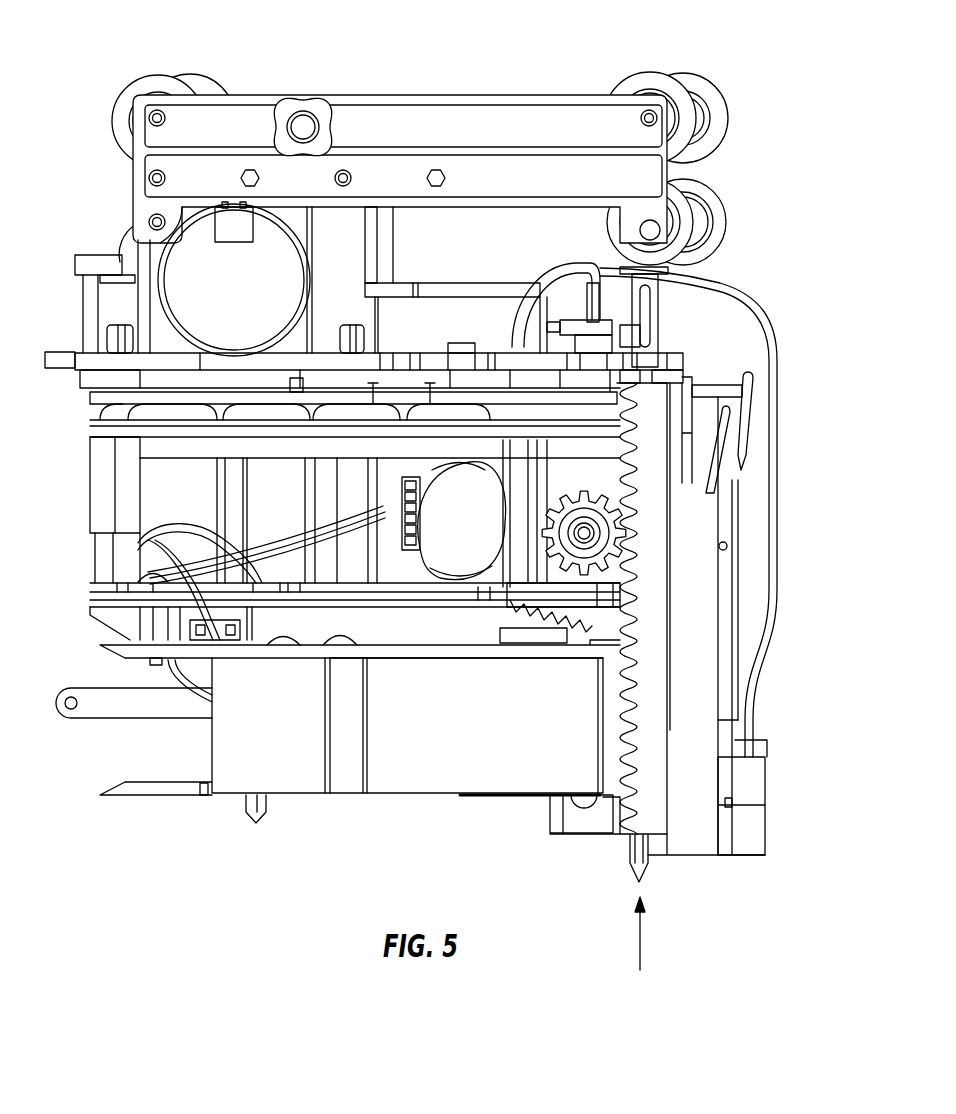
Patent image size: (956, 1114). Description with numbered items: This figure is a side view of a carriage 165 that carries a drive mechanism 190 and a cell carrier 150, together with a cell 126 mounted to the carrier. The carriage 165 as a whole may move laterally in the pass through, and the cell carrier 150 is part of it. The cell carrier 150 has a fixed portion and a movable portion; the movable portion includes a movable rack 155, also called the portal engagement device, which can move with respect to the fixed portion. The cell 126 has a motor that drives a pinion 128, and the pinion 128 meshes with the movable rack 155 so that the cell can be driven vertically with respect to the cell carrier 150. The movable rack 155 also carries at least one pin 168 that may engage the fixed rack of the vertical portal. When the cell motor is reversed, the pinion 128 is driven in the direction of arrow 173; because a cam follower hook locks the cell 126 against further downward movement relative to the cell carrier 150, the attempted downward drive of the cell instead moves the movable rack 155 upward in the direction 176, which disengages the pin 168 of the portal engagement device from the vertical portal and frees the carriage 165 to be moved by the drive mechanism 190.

The drive mechanism 190 is at (550, 48).
The carriage 165 is at (742, 180).
The arrow 173 is at (566, 600).
The cell carrier 150 is at (740, 583).
The pinion 128 is at (622, 582).
The movable rack 155 is at (662, 690).
The cell 126 is at (420, 795).
The pin 168 is at (648, 863).
The upward movement 176 is at (640, 935).